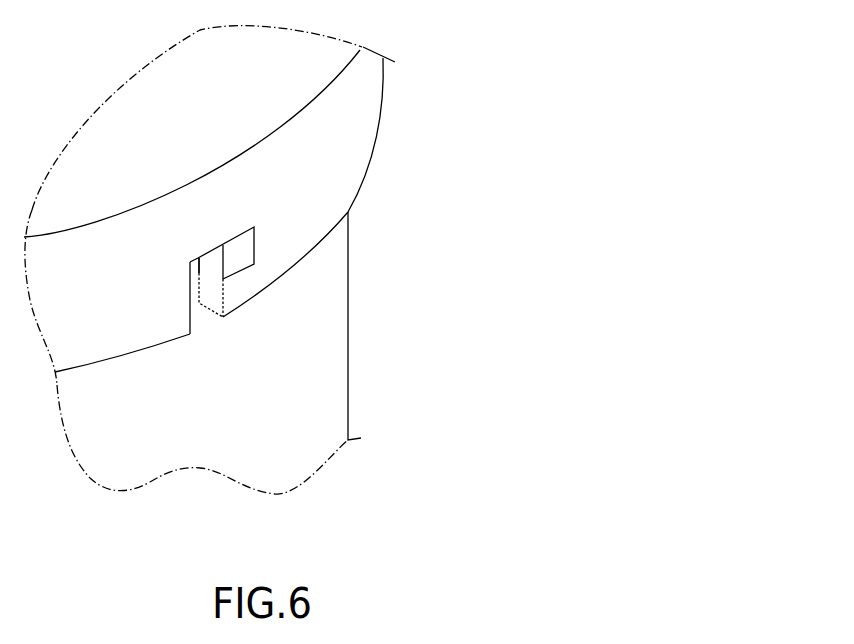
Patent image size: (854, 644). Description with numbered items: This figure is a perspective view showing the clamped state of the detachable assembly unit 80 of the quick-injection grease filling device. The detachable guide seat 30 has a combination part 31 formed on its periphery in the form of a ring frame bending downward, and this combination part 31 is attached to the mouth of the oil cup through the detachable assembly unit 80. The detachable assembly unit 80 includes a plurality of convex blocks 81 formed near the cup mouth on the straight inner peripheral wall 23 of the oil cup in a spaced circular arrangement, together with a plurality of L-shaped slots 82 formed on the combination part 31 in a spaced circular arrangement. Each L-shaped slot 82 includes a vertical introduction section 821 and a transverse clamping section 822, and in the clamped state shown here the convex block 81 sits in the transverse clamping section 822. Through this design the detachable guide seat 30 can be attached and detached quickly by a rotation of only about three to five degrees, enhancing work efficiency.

The detachable guide seat 30 is at (397, 88).
The combination part 31 is at (350, 143).
The straight inner peripheral wall 23 is at (340, 403).
The detachable assembly unit 80 is at (386, 303).
The convex block 81 is at (242, 247).
The L-shaped slot 82 is at (353, 319).
The vertical introduction section 821 is at (189, 290).
The transverse clamping section 822 is at (199, 272).